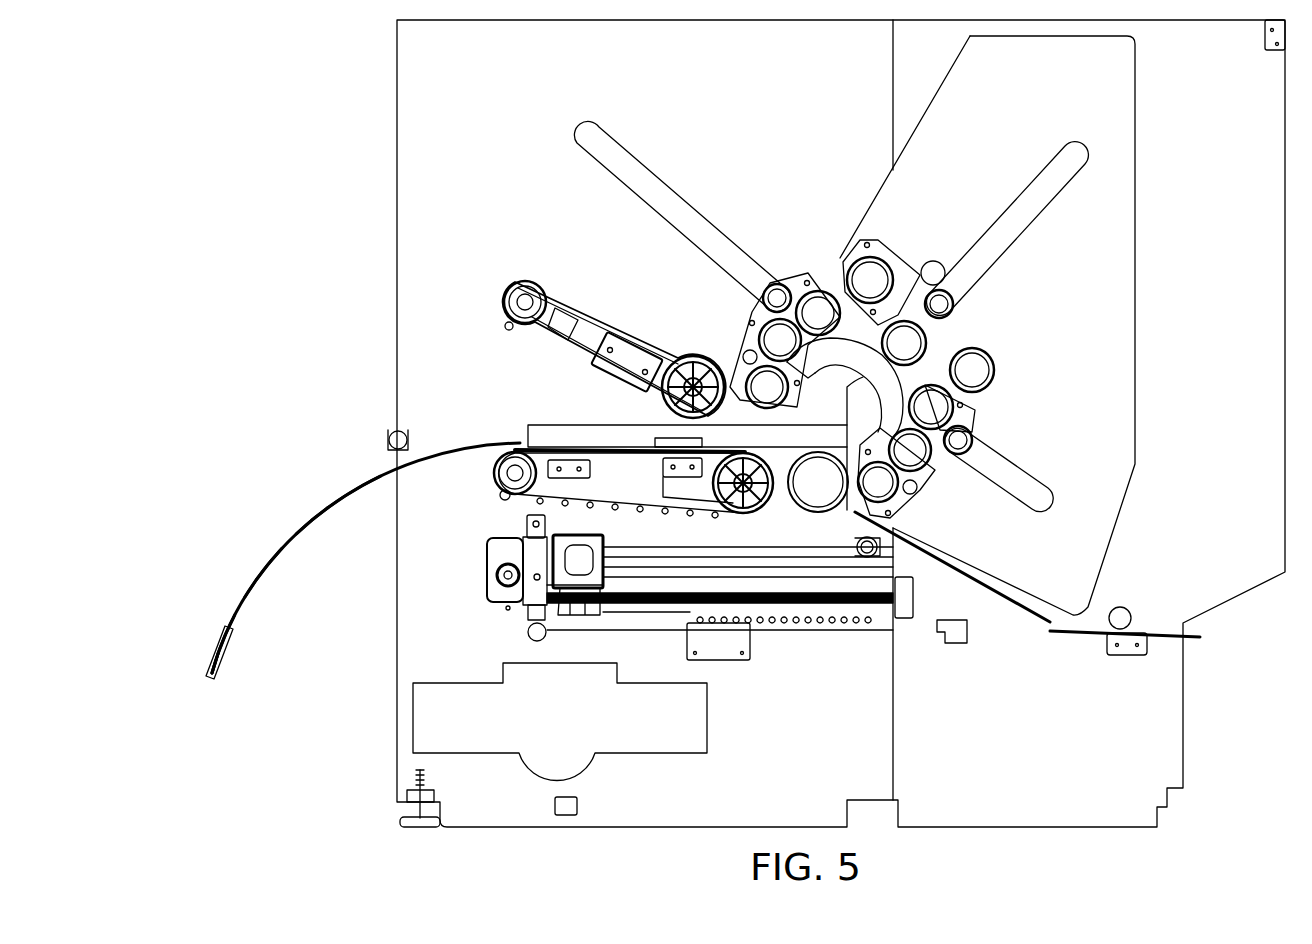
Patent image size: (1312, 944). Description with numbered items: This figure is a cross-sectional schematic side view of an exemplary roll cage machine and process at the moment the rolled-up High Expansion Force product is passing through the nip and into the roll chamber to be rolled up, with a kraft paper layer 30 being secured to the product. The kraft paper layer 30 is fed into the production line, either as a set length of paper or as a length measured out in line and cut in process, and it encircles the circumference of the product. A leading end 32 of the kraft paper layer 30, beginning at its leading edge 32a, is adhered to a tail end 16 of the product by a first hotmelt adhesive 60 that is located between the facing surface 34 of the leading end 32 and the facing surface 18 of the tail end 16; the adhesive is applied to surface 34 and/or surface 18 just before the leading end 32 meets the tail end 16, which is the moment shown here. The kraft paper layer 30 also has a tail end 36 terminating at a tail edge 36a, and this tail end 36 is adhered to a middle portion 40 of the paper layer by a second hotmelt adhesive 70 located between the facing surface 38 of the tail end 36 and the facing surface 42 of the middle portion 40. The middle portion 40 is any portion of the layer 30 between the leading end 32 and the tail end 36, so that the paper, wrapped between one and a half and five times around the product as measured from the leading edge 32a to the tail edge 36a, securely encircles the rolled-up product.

The tail end 16 is at (551, 436).
The facing surface 18 is at (605, 460).
The kraft paper layer 30 is at (443, 450).
The leading end 32 is at (640, 440).
The leading edge 32a is at (702, 440).
The facing surface 34 is at (590, 433).
The tail end 36 is at (228, 650).
The tail edge 36a is at (212, 673).
The facing surface 38 is at (261, 570).
The middle portion 40 is at (338, 500).
The facing surface 42 is at (306, 527).
The first hotmelt adhesive 60 is at (668, 358).
The second hotmelt adhesive 70 is at (213, 650).